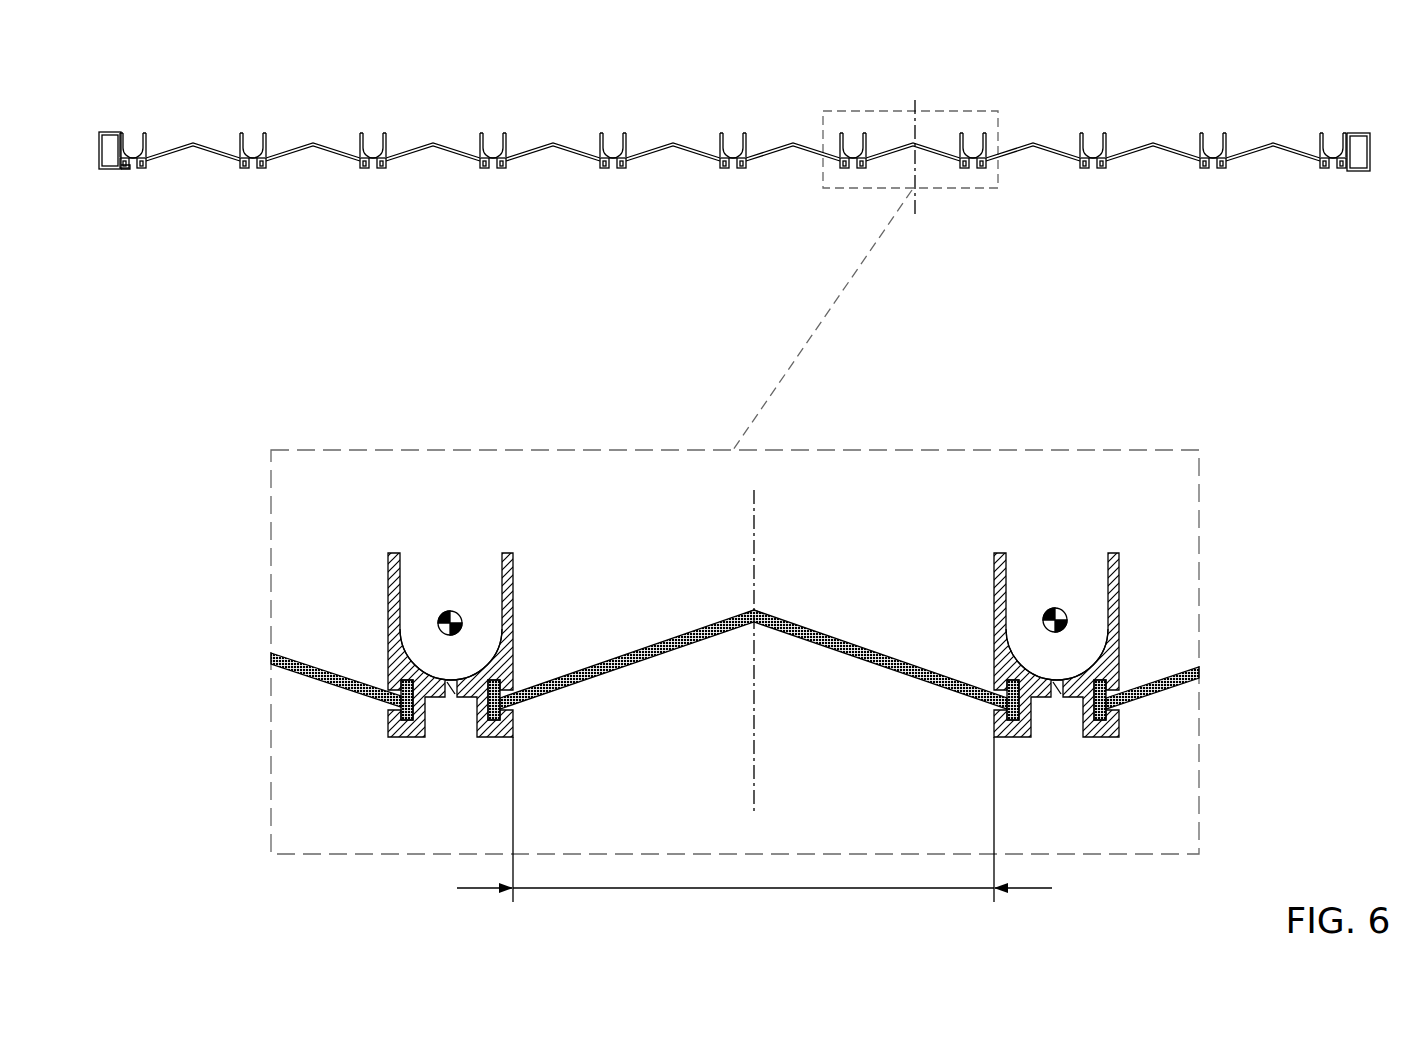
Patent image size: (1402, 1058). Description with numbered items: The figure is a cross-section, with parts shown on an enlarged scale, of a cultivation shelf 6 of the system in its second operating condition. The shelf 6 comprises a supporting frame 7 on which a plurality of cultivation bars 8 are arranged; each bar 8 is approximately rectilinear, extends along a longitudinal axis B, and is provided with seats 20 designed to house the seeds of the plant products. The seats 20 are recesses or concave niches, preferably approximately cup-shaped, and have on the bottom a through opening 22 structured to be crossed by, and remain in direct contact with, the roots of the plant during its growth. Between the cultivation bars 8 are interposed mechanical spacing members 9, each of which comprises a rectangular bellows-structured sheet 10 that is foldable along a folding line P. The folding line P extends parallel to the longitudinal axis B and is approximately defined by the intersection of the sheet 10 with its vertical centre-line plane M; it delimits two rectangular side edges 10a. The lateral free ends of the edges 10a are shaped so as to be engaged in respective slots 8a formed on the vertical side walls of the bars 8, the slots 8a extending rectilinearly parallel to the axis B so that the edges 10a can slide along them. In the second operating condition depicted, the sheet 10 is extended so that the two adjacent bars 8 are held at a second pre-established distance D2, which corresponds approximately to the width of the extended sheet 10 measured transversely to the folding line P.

The shelf 6 is at (293, 145).
The supporting frame 7 is at (107, 148).
The cultivation bar 8 is at (743, 136).
The slot 8a is at (386, 712).
The mechanical spacing member 9 is at (192, 142).
The bellows-structured sheet 10 is at (1143, 150).
The side edge 10a is at (421, 142).
The seat 20 is at (494, 155).
The through opening 22 is at (451, 692).
The longitudinal axis B is at (458, 633).
The centre-line plane M is at (914, 108).
The folding line P is at (554, 143).
The second pre-established distance D2 is at (754, 819).